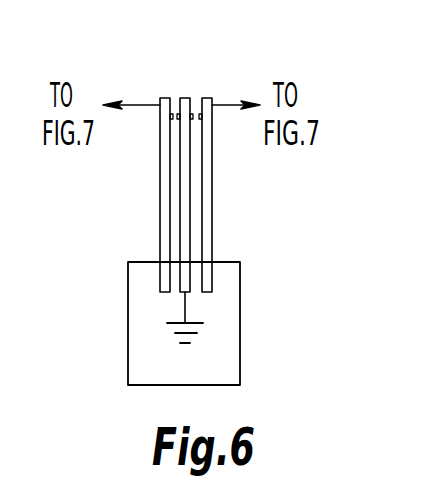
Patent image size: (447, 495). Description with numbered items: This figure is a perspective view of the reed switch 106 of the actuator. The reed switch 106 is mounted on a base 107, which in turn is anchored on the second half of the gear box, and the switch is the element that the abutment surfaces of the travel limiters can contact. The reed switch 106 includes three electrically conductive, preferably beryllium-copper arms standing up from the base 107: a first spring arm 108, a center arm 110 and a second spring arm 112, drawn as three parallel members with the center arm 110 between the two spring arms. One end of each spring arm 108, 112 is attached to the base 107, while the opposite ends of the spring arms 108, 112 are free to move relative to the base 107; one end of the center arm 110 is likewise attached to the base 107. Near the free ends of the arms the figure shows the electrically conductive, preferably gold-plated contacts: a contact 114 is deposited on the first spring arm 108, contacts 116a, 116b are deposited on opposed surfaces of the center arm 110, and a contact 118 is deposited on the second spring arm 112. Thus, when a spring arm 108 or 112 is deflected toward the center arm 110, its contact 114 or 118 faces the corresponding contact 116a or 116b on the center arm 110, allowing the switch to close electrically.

The reed switch 106 is at (263, 280).
The base 107 is at (231, 348).
The first spring arm 108 is at (160, 182).
The center arm 110 is at (188, 178).
The second spring arm 112 is at (212, 212).
The contact 114 is at (172, 114).
The contact 116a is at (178, 114).
The contact 116b is at (192, 114).
The contact 118 is at (201, 114).